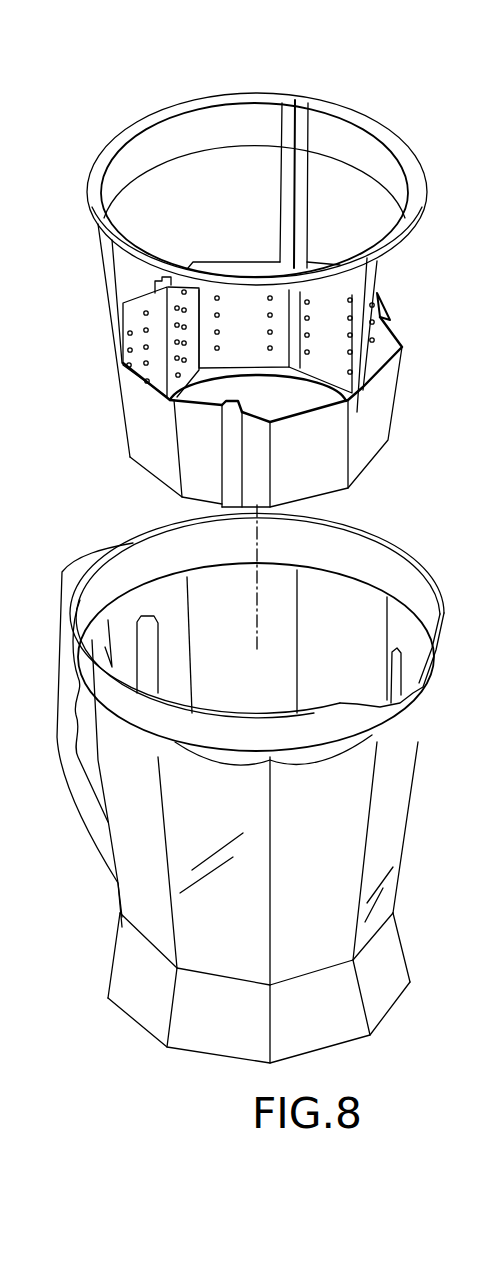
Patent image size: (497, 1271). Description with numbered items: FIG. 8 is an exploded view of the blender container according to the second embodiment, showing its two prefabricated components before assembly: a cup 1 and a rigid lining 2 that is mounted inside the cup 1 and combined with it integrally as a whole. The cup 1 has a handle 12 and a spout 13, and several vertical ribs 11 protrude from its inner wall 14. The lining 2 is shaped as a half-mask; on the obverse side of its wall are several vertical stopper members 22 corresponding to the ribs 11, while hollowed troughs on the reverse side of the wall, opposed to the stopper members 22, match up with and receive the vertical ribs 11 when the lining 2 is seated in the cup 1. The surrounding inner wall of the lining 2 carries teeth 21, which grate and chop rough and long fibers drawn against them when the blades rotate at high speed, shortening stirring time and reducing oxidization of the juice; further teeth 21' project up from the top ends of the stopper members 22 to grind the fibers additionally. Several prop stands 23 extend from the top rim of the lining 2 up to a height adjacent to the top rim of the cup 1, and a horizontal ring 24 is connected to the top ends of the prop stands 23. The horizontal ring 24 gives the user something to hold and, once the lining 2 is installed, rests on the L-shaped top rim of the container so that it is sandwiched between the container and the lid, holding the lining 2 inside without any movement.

The cup 1 is at (390, 812).
The vertical ribs 11 is at (147, 617).
The handle 12 is at (77, 573).
The spout 13 is at (402, 695).
The inner wall of pitcher 14 is at (343, 582).
The lining 2 is at (390, 383).
The teeth 21 is at (248, 303).
The teeth 21' is at (209, 381).
The stopper members 22 is at (155, 290).
The prop stands 23 is at (298, 188).
The horizontal ring 24 is at (178, 106).